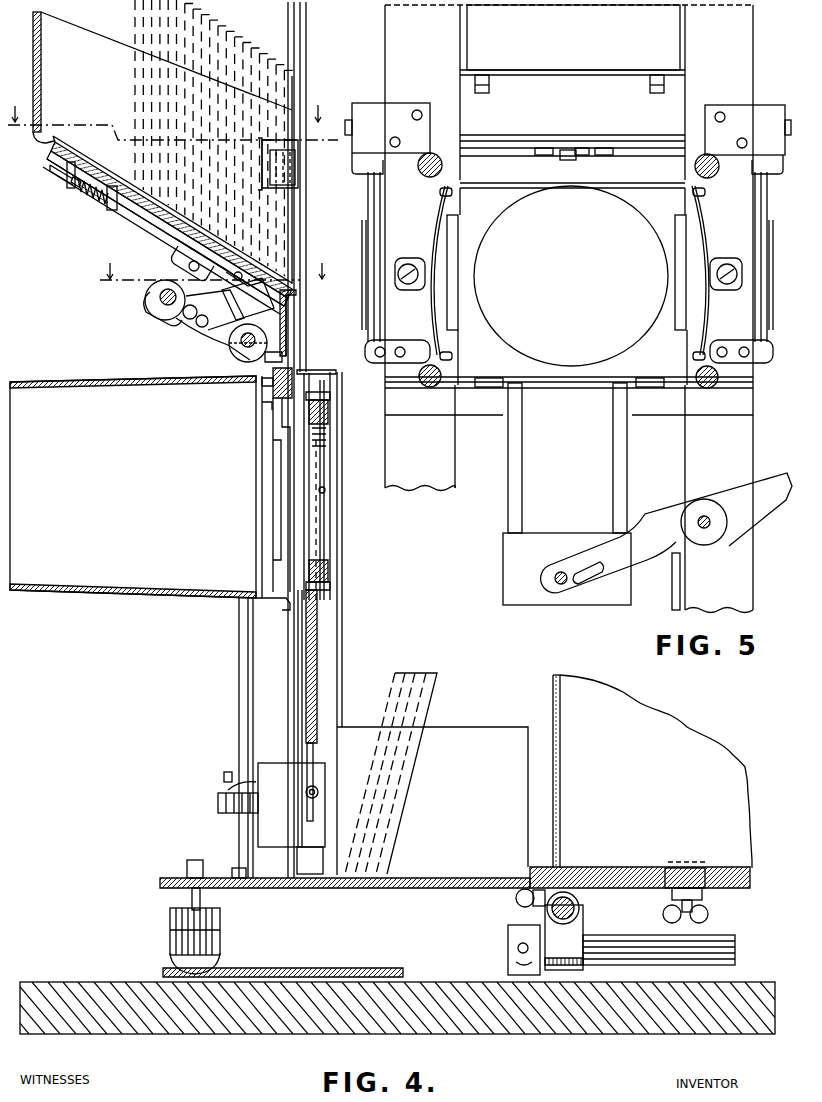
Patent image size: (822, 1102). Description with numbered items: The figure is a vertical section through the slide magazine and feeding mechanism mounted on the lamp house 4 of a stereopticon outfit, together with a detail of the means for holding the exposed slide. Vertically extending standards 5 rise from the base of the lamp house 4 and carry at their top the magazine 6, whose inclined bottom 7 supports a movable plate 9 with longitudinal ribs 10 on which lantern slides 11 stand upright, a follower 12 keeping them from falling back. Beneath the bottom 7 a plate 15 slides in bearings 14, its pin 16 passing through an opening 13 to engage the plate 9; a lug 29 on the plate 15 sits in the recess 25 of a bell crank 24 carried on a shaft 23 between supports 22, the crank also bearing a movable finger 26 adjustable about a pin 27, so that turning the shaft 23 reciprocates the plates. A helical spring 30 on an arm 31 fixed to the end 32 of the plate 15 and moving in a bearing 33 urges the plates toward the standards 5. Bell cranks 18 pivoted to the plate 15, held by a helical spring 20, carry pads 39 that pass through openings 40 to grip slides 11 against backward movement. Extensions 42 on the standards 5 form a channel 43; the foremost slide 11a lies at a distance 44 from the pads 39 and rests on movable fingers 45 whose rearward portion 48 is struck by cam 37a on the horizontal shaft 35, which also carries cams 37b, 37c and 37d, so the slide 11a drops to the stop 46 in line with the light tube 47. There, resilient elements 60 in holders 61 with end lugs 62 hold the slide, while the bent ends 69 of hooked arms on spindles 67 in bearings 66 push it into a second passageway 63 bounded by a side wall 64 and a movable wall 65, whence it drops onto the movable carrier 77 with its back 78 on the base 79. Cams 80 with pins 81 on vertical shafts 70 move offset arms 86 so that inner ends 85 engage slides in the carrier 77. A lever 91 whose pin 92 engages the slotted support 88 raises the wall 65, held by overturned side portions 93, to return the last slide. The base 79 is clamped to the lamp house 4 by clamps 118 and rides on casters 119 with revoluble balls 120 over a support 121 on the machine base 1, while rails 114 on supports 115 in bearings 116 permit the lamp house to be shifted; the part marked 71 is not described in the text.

In FIG. 4, the table or support 1 is at (232, 1032).
In FIG. 4, the lamp house 4 is at (655, 771).
In FIG. 4, the standards 5 is at (306, 33).
In FIG. 5, the standards 5 is at (764, 560).
In FIG. 4, the magazine 6 is at (76, 40).
In FIG. 4, the inclined bottom 7 is at (44, 140).
In FIG. 4, the plate 9 is at (34, 50).
In FIG. 4, the ribs 10 is at (96, 148).
In FIG. 4, the lantern slides 11 is at (412, 692).
In FIG. 4, the slide 11a is at (297, 110).
In FIG. 4, the follower 12 is at (136, 17).
In FIG. 4, the opening 13 is at (160, 218).
In FIG. 4, the bearings 14 is at (182, 178).
In FIG. 4, the plate 15 is at (150, 205).
In FIG. 4, the pin 16 is at (175, 228).
In FIG. 4, the bell cranks 18 is at (251, 299).
In FIG. 4, the helical spring 20 is at (238, 273).
In FIG. 4, the supports 22 is at (145, 297).
In FIG. 4, the spindle or shaft 23 is at (184, 316).
In FIG. 4, the bell crank 24 is at (158, 306).
In FIG. 4, the recess 25 is at (180, 262).
In FIG. 4, the movable finger 26 is at (230, 340).
In FIG. 4, the pin 27 is at (199, 326).
In FIG. 4, the lug 29 is at (178, 240).
In FIG. 4, the helical spring 30 is at (88, 200).
In FIG. 4, the arm 31 is at (56, 180).
In FIG. 4, the end 32 is at (110, 212).
In FIG. 4, the bearing 33 is at (70, 192).
In FIG. 4, the shaft 35 is at (262, 385).
In FIG. 5, the shaft 35 is at (350, 112).
In FIG. 5, the cam 37a is at (608, 148).
In FIG. 4, the cam 37b is at (264, 404).
In FIG. 5, the cam 37b is at (588, 148).
In FIG. 4, the cam 37c is at (258, 384).
In FIG. 5, the cam 37c is at (565, 148).
In FIG. 5, the cam 37d is at (545, 148).
In FIG. 4, the cushions or pads 39 is at (292, 182).
In FIG. 4, the openings 40 is at (275, 145).
In FIG. 4, the extensions 42 is at (294, 340).
In FIG. 4, the channel or guide 43 is at (294, 320).
In FIG. 4, the distance 44 is at (300, 163).
In FIG. 4, the movable fingers 45 is at (296, 300).
In FIG. 5, the movable fingers 45 is at (482, 78).
In FIG. 4, the stop 46 is at (288, 604).
In FIG. 5, the stop 46 is at (490, 390).
In FIG. 4, the tube 47 is at (135, 598).
In FIG. 4, the rearwardly extending portion 48 is at (236, 350).
In FIG. 4, the resilient elements 60 is at (326, 438).
In FIG. 5, the resilient elements 60 is at (430, 216).
In FIG. 4, the holders 61 is at (326, 492).
In FIG. 5, the holders 61 is at (408, 262).
In FIG. 4, the lugs 62 is at (326, 406).
In FIG. 5, the lugs 62 is at (454, 190).
In FIG. 4, the second channel or passageway 63 is at (342, 628).
In FIG. 4, the side wall 64 is at (338, 472).
In FIG. 4, the movable wall 65 is at (318, 684).
In FIG. 5, the movable wall 65 is at (534, 491).
In FIG. 4, the bearings 66 is at (324, 363).
In FIG. 5, the bearings 66 is at (364, 160).
In FIG. 5, the spindles 67 is at (382, 300).
In FIG. 4, the inner bent ends 69 is at (285, 524).
In FIG. 5, the inner bent ends 69 is at (460, 240).
In FIG. 4, the vertically extending shafts 70 is at (239, 740).
In FIG. 4, the foot 71 is at (250, 877).
In FIG. 4, the movable carrier 77 is at (320, 889).
In FIG. 4, the back 78 is at (404, 780).
In FIG. 4, the base 79 is at (460, 889).
In FIG. 4, the cams 80 is at (218, 804).
In FIG. 4, the pins 81 is at (222, 777).
In FIG. 4, the inner ends 85 is at (306, 806).
In FIG. 5, the inner ends 85 is at (680, 576).
In FIG. 4, the offset arms 86 is at (235, 785).
In FIG. 4, the support 88 is at (298, 724).
In FIG. 5, the lever 91 is at (645, 560).
In FIG. 4, the pin 92 is at (306, 792).
In FIG. 5, the pin 92 is at (570, 588).
In FIG. 4, the overturned side portions 93 is at (291, 805).
In FIG. 5, the overturned side portions 93 is at (503, 586).
In FIG. 4, the rails 114 is at (580, 907).
In FIG. 4, the supports 115 is at (636, 955).
In FIG. 4, the bearings 116 is at (545, 932).
In FIG. 4, the clamps 118 is at (706, 903).
In FIG. 4, the casters 119 is at (170, 932).
In FIG. 4, the revoluble balls 120 is at (170, 966).
In FIG. 4, the support 121 is at (382, 968).